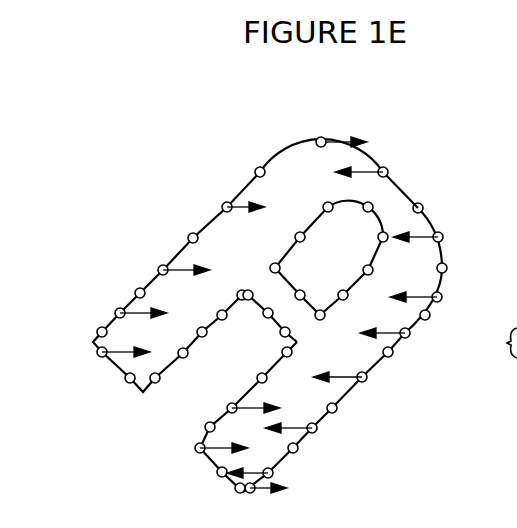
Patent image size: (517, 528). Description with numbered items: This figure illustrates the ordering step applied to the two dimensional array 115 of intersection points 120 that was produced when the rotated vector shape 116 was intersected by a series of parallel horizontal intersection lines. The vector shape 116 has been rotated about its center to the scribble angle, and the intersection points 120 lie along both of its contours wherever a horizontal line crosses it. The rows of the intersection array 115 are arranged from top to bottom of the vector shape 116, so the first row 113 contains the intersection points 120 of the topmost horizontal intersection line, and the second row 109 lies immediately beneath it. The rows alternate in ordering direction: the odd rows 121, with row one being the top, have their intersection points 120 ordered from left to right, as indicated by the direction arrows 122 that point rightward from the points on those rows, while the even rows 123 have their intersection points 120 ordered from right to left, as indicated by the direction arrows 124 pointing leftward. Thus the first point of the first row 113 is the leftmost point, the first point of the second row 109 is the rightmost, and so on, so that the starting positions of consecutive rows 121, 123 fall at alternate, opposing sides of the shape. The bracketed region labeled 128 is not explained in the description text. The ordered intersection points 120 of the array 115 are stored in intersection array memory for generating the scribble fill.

The vector shape 116 is at (207, 116).
The two dimensional array 115 is at (443, 318).
The direction arrows 124 is at (374, 177).
The intersection points 120 is at (387, 194).
The direction arrows 122 is at (334, 140).
The first row 113 is at (290, 143).
The second row 109 is at (250, 172).
The odd rows 121 is at (220, 207).
The even rows 123 is at (185, 238).
The adjacent structure 128 is at (498, 312).